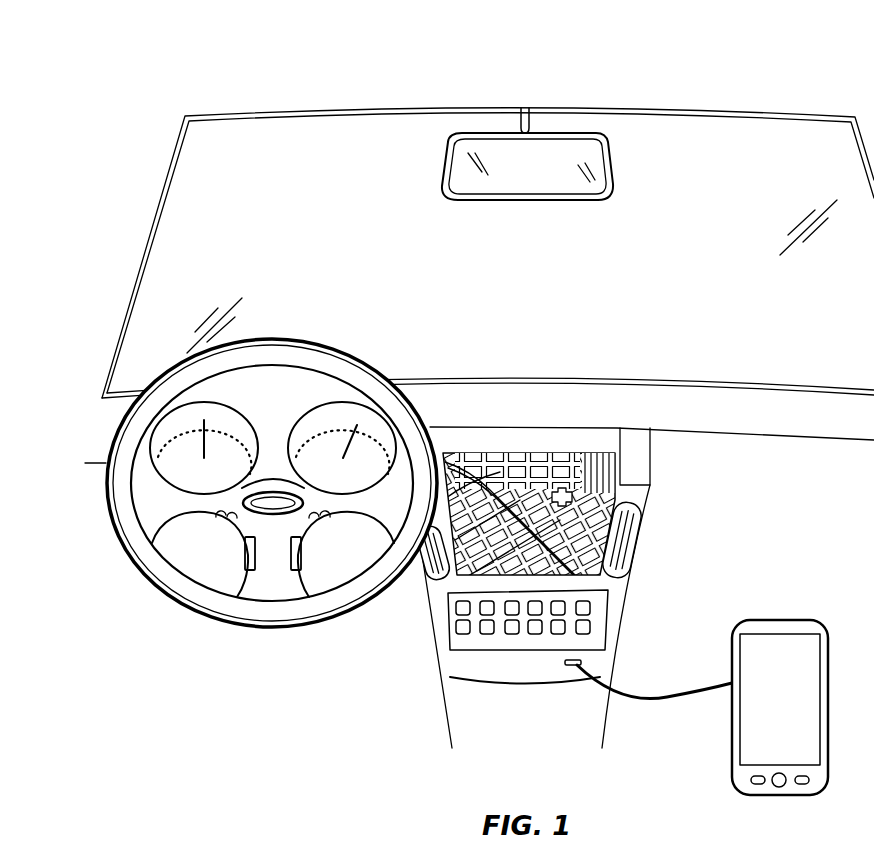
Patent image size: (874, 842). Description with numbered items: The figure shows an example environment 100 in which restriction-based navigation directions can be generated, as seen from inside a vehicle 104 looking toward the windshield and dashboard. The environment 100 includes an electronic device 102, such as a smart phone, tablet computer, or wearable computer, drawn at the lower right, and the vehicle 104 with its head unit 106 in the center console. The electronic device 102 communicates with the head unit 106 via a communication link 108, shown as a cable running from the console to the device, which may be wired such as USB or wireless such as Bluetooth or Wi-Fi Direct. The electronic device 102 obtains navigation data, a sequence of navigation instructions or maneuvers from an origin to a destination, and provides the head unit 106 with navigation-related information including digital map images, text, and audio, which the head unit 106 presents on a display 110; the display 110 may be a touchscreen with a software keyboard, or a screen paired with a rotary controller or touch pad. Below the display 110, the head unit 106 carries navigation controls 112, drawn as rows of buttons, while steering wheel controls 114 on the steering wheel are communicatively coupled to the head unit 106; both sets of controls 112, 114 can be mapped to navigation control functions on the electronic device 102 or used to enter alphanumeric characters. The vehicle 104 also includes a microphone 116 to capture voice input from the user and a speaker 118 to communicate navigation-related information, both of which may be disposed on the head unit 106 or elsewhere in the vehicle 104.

The environment 100 is at (278, 62).
The electronic device 102 is at (785, 618).
The vehicle 104 is at (93, 362).
The head unit 106 is at (567, 416).
The communication link 108 is at (656, 688).
The display 110 is at (600, 477).
The navigation controls 112 is at (456, 620).
The steering wheel controls 114 is at (240, 560).
The microphone 116 is at (427, 560).
The speaker 118 is at (630, 538).